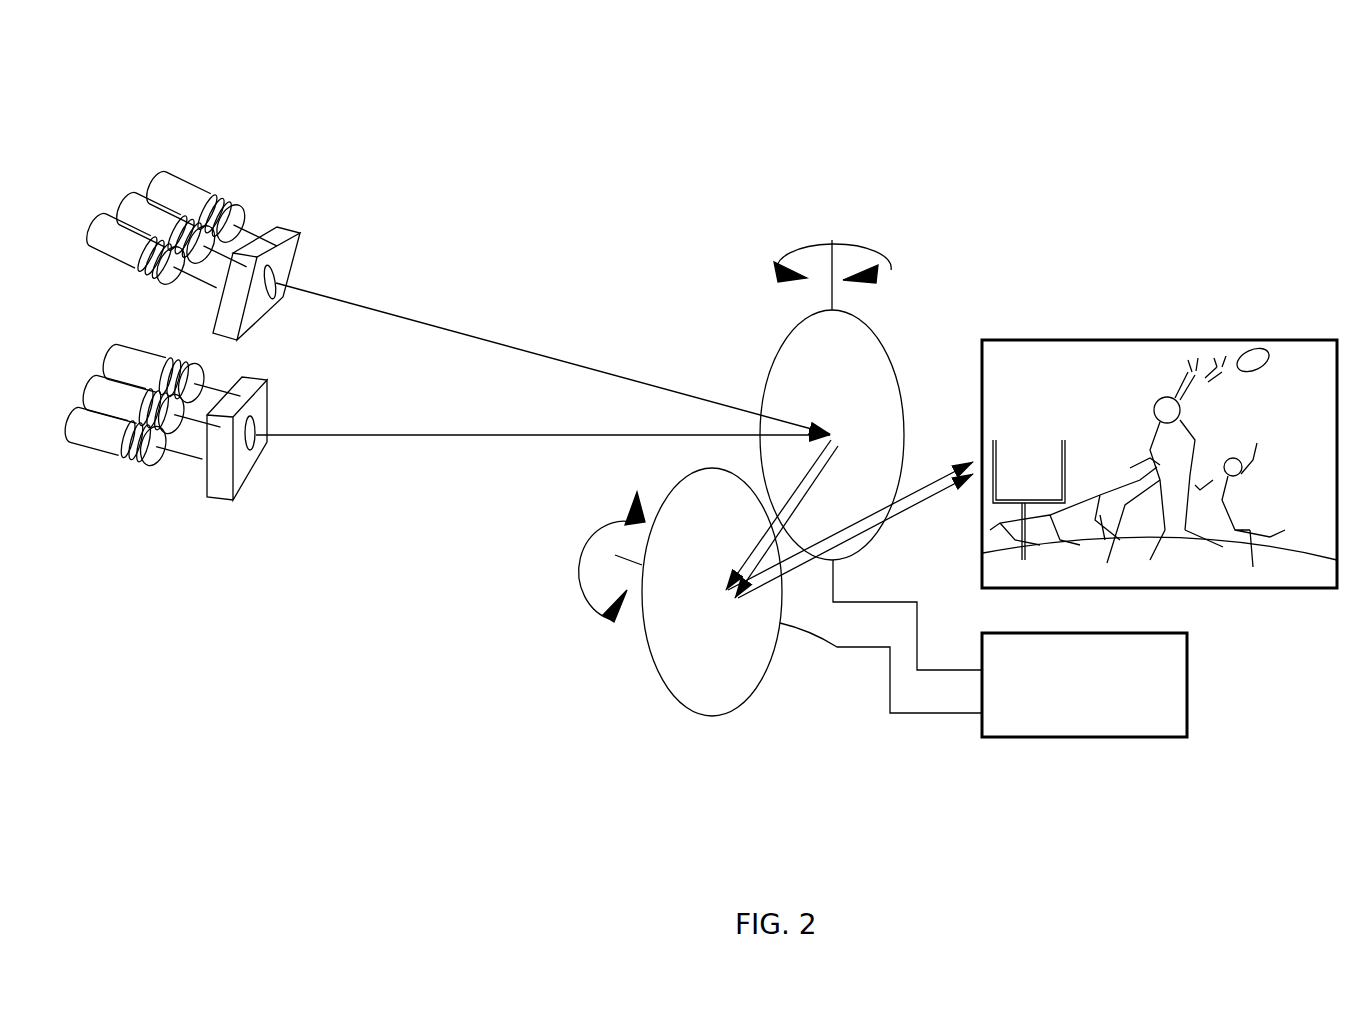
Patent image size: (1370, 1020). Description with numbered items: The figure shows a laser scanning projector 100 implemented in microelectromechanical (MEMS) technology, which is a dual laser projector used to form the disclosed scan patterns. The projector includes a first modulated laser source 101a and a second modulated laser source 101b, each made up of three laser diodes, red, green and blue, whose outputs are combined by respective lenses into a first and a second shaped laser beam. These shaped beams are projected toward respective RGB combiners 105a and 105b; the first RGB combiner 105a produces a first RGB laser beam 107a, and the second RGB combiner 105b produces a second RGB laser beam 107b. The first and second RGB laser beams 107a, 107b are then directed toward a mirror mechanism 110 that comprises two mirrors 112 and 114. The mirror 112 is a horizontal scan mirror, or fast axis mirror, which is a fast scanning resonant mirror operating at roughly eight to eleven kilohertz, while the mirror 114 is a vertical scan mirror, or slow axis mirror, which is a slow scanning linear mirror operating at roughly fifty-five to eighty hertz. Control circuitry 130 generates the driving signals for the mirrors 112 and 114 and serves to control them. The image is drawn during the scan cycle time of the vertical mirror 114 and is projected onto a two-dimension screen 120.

The laser scanning projector 100 is at (594, 118).
The first modulated laser source 101a is at (230, 154).
The second modulated laser source 101b is at (125, 502).
The first RGB combiner 105a is at (332, 207).
The second RGB combiner 105b is at (251, 527).
The first RGB laser beam 107a is at (482, 335).
The second RGB laser beam 107b is at (386, 440).
The mirror mechanism 110 is at (644, 705).
The horizontal scan mirror 112 is at (892, 353).
The vertical scan mirror 114 is at (772, 673).
The two-dimension screen 120 is at (1252, 612).
The control circuitry 130 is at (1154, 764).